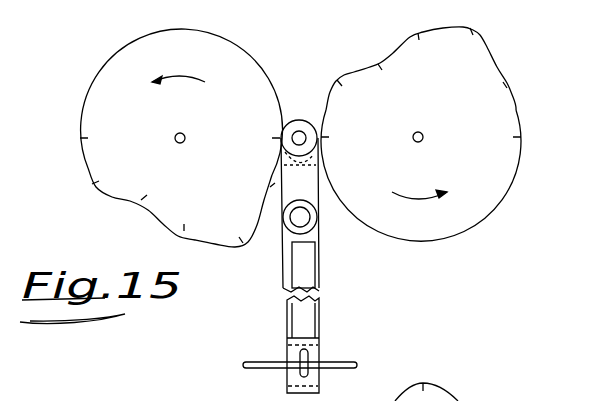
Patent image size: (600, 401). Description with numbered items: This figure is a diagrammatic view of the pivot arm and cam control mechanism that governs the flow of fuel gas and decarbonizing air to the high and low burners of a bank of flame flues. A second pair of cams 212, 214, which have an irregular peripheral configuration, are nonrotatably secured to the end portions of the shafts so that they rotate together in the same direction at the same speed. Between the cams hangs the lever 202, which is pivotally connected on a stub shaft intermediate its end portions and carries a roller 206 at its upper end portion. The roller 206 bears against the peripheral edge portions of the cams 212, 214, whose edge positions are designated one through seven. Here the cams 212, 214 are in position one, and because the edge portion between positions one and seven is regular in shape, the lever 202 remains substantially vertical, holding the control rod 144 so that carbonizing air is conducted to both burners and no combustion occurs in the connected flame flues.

The cam 214 is at (181, 138).
The cam 212 is at (421, 134).
The roller 206 is at (298, 120).
The lever 202 is at (306, 265).
The control rod 144 is at (344, 362).